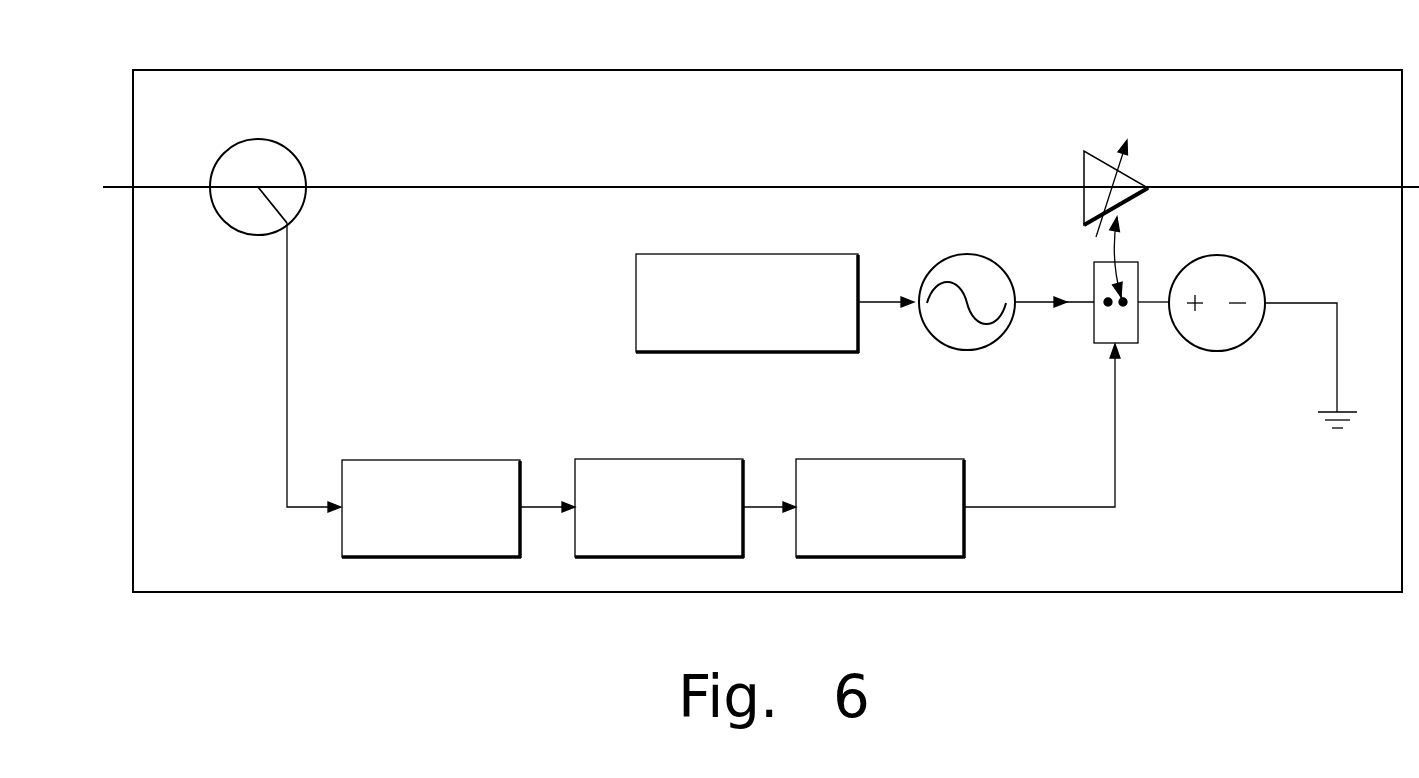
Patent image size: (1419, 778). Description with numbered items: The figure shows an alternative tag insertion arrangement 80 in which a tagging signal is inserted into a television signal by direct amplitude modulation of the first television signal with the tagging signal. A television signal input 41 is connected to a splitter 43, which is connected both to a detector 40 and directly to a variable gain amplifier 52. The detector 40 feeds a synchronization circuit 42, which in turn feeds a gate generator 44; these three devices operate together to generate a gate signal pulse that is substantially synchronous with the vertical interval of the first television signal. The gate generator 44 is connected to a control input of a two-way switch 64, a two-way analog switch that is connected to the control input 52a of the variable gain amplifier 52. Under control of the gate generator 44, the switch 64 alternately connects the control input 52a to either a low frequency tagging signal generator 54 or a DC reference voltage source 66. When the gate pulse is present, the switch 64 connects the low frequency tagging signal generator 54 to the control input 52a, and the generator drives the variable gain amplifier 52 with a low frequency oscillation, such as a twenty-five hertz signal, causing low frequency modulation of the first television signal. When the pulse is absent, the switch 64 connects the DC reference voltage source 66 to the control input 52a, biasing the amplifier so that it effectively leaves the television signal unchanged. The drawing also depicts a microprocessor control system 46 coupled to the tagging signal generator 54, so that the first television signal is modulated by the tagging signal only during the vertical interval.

The tag insertion arrangement 80 is at (743, 70).
The television signal input 41 is at (133, 187).
The splitter 43 is at (257, 139).
The detector 40 is at (427, 460).
The synchronization circuit 42 is at (655, 459).
The gate generator 44 is at (875, 459).
The microprocessor control system 46 is at (747, 254).
The low frequency tagging signal generator 54 is at (968, 254).
The variable gain amplifier 52 is at (1135, 178).
The control input 52a is at (1125, 203).
The two-way switch 64 is at (1093, 344).
The DC reference voltage source 66 is at (1217, 255).